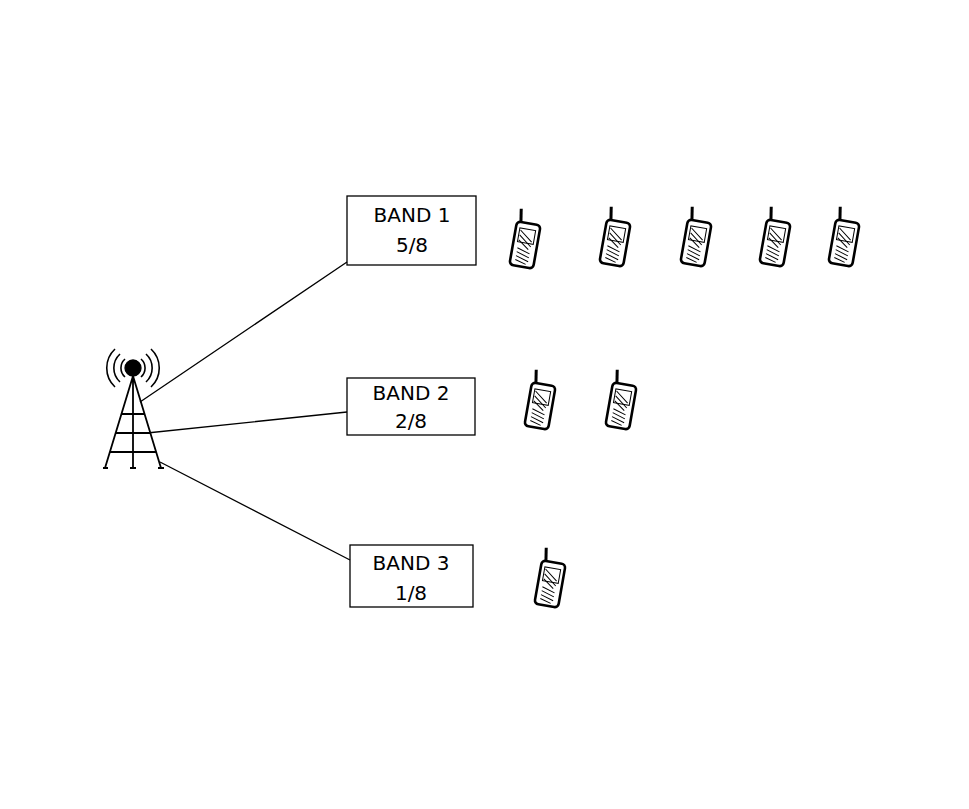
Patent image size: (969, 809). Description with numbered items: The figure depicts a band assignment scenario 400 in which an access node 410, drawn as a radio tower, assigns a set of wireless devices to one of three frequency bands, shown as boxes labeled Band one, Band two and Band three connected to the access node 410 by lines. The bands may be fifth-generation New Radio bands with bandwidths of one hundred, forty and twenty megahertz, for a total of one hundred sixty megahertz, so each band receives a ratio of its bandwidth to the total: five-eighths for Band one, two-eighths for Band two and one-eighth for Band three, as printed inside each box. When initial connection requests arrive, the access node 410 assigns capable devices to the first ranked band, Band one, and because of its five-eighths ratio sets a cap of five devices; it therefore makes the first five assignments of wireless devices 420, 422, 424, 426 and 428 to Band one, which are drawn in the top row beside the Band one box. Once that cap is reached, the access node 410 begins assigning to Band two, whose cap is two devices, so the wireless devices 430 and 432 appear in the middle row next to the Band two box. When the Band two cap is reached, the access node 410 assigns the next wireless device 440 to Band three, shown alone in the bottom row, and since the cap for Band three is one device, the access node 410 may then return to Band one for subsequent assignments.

The wireless communication system 400 is at (591, 62).
The access node 410 is at (135, 342).
The wireless device 420 is at (522, 268).
The wireless device 422 is at (612, 266).
The wireless device 424 is at (693, 266).
The wireless device 426 is at (772, 266).
The wireless device 428 is at (841, 266).
The wireless device 430 is at (545, 430).
The wireless device 432 is at (624, 430).
The wireless device 440 is at (525, 594).